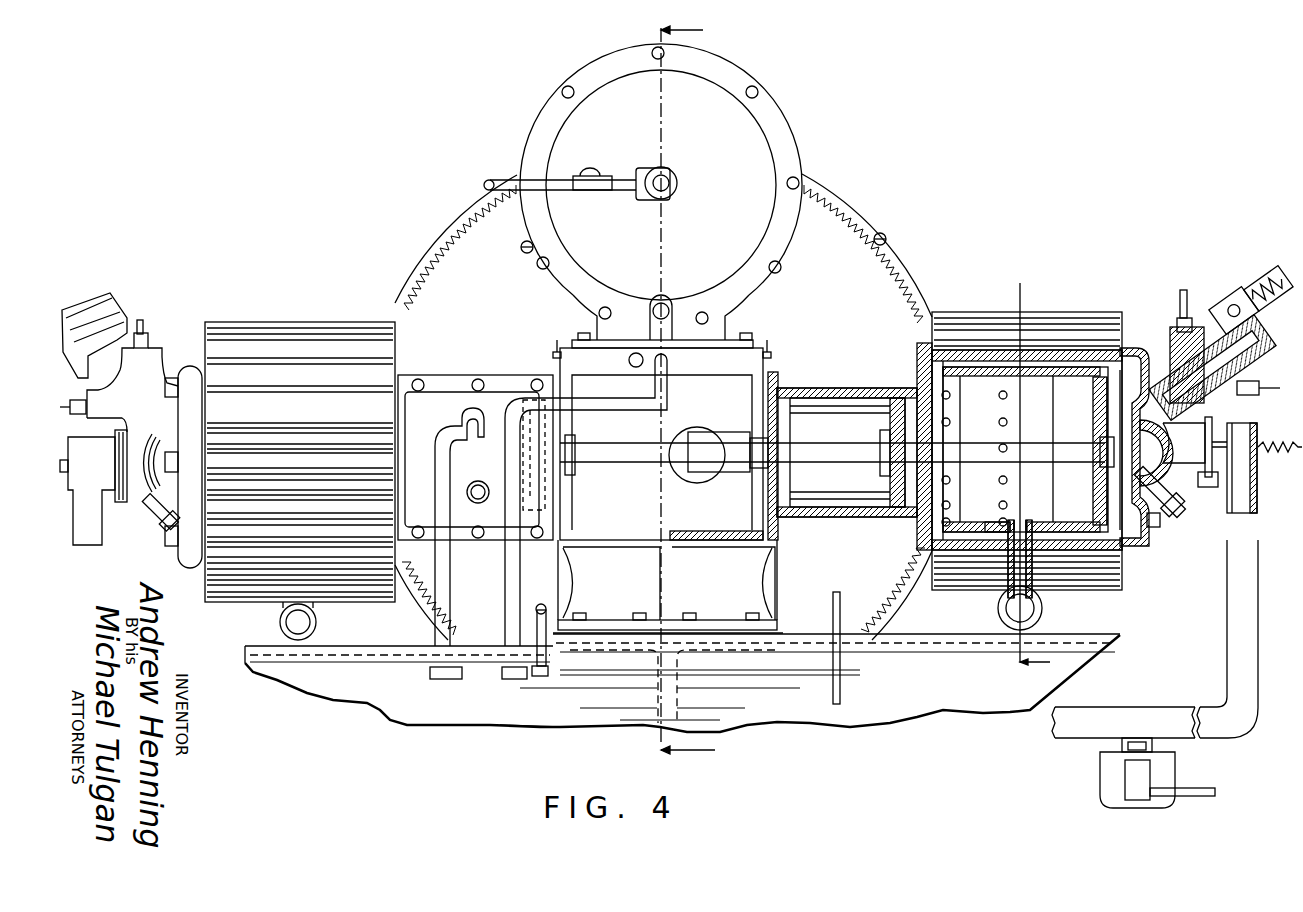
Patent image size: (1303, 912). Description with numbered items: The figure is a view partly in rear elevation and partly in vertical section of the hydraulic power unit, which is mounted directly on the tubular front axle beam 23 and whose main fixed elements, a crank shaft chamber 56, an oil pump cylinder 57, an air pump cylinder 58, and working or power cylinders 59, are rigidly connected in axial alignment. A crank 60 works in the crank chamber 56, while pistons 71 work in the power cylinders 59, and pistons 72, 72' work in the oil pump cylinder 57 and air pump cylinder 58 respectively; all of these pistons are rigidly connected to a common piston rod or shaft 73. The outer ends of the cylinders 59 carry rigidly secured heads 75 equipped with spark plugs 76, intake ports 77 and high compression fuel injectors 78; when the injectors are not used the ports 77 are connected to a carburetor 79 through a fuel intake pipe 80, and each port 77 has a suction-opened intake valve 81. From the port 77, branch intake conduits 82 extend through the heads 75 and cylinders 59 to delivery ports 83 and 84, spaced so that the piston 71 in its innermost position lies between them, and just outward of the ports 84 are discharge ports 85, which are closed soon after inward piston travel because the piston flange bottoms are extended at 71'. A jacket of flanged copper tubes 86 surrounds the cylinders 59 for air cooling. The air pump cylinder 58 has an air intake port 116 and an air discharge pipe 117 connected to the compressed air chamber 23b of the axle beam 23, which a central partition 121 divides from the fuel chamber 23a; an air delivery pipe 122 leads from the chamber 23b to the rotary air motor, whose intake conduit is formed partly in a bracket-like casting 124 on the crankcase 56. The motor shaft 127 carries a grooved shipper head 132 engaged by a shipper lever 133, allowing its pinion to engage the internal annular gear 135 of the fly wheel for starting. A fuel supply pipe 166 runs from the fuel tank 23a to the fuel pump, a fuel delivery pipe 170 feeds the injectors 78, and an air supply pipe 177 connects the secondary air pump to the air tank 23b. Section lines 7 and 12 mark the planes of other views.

The section line 7- 7 is at (682, 392).
The section line 12- 12 is at (1046, 283).
The tubular front axle beam 23 is at (322, 698).
The fuel storage chamber 23a is at (948, 711).
The compressed air chamber 23b is at (520, 708).
The crank shaft chamber 56 is at (718, 520).
The oil pump cylinder 57 is at (836, 515).
The air pump cylinder 58 is at (430, 410).
The working or power cylinders 59 is at (398, 557).
The crank 60 is at (688, 470).
The pistons 71 is at (1025, 449).
The extended piston flange bottoms 71' is at (1081, 450).
The oil pump piston 72 is at (877, 452).
The air pump piston 72' is at (563, 455).
The common piston rod or shaft 73 is at (845, 460).
The cylinder heads 75 is at (200, 549).
The spark plugs 76 is at (1192, 516).
The intake ports 77 is at (1170, 445).
The high compression fuel injectors 78 is at (1225, 369).
The carburetor 79 is at (1100, 780).
The fuel intake pipe 80 is at (1236, 664).
The suction-opened intake valve 81 is at (1214, 487).
The branch intake conduits 82 is at (1092, 546).
The delivery port 83 is at (947, 377).
The delivery port 84 is at (1000, 522).
The discharge ports 85 is at (282, 624).
The flanged copper tubes 86 is at (278, 322).
The air intake port 116 is at (478, 482).
The air discharge pipe 117 is at (440, 653).
The central partition 121 is at (690, 704).
The air delivery pipe 122 is at (502, 659).
The supplemental bracket-like casting 124 is at (787, 119).
The motor shaft 127 is at (678, 187).
The grooved shipper head 132 is at (678, 180).
The shipper lever 133 is at (617, 192).
The internal annular gear 135 is at (458, 228).
The fuel supply pipe 166 is at (843, 613).
The fuel delivery pipe 170 is at (150, 318).
The air supply pipe 177 is at (548, 613).